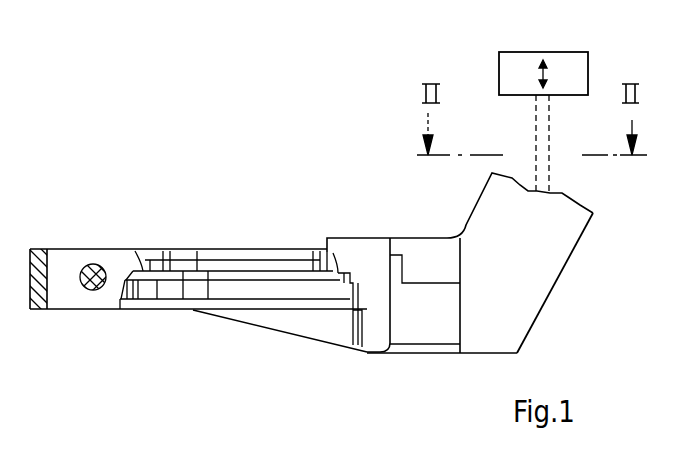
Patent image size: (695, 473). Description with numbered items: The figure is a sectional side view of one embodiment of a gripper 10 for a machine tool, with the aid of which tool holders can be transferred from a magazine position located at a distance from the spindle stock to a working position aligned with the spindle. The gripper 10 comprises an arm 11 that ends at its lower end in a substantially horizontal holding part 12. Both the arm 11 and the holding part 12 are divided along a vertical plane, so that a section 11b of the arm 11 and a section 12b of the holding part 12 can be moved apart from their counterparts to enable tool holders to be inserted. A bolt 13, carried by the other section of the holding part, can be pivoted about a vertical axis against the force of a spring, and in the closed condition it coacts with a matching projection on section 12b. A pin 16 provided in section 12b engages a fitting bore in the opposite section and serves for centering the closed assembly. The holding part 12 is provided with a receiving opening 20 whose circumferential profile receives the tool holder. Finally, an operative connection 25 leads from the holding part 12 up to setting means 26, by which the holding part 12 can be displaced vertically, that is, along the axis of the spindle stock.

The gripper 10 is at (313, 187).
The arm 11 is at (567, 284).
The section of the arm 11b is at (520, 313).
The holding part 12 is at (403, 373).
The section of the holding part 12b is at (372, 277).
The bolt 13 is at (38, 298).
The pin 16 is at (88, 264).
The receiving opening 20 is at (168, 250).
The operative connection 25 is at (547, 150).
The setting means 26 is at (568, 68).